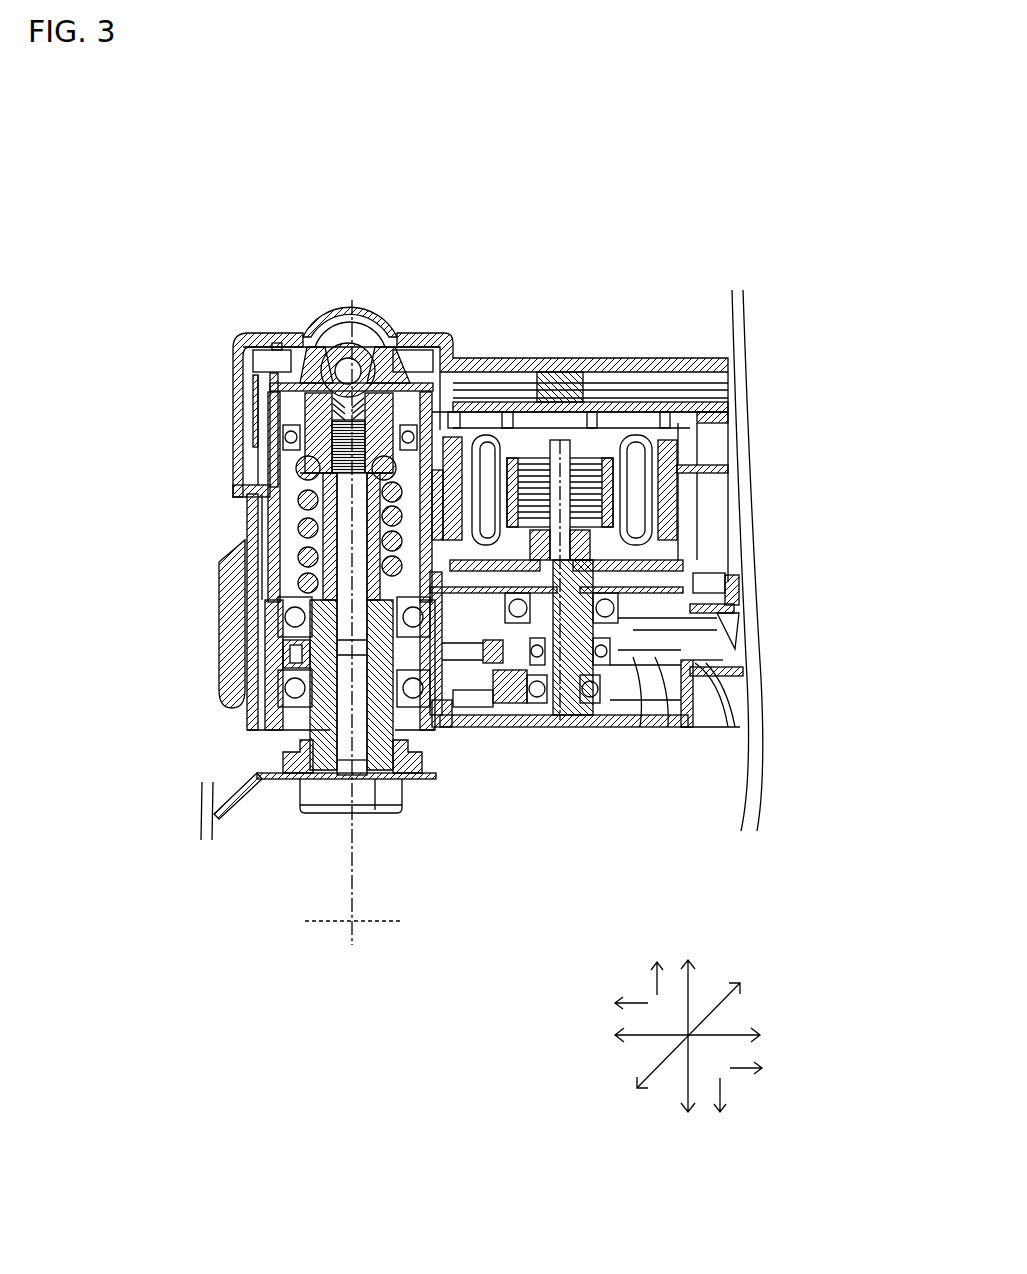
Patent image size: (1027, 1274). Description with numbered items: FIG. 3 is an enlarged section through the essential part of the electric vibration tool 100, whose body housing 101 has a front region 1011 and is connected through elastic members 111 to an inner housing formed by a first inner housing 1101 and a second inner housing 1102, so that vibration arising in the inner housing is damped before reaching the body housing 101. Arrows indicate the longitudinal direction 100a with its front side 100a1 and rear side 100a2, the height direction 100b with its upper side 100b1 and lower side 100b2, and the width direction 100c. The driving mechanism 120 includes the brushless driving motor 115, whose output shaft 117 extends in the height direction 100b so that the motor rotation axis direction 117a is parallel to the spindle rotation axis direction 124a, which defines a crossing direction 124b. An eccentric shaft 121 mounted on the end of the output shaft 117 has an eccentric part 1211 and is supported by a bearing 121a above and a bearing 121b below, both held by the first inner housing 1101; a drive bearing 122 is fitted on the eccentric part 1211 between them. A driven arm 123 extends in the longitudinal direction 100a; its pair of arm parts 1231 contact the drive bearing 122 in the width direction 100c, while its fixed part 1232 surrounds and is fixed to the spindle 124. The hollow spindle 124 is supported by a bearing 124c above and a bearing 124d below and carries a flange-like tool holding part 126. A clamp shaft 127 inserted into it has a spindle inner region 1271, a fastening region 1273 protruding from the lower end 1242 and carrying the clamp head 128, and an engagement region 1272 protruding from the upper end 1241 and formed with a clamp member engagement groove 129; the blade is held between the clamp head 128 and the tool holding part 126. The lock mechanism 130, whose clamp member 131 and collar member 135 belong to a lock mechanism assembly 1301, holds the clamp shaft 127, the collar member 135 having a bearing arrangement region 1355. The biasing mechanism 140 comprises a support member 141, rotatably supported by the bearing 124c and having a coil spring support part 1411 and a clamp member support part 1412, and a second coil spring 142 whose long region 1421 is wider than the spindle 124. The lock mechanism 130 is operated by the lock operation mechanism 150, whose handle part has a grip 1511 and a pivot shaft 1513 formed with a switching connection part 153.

The electric vibration tool 100 is at (188, 228).
The front region 1011 is at (568, 226).
The driving motor 115 is at (598, 372).
The elastic members 111 is at (553, 383).
The first inner housing 1101 is at (528, 412).
The second inner housing 1102 is at (437, 372).
The lock operation mechanism 150 is at (343, 305).
The clamp member 131 is at (300, 340).
The switching connection part 153 is at (320, 383).
The pivot shaft 1513 is at (372, 350).
The body housing 101 is at (250, 335).
The collar member 135 is at (262, 352).
The clamp member engagement groove 129 is at (268, 430).
The lock mechanism 130 is at (237, 466).
The lock mechanism assembly 1301 is at (237, 473).
The bearing arrangement region 1355 is at (240, 465).
The biasing mechanism 140 is at (262, 512).
The coil spring support part 1411 is at (227, 557).
The long region 1421 is at (476, 415).
The clamp member support part 1412 is at (405, 350).
The support member 141 is at (260, 533).
The second coil spring 142 is at (292, 530).
The engagement region 1272 is at (352, 420).
The clamp shaft 127 is at (343, 520).
The spindle inner region 1271 is at (420, 775).
The fastening region 1273 is at (300, 790).
The upper end 1241 is at (222, 583).
The fixed part 1232 is at (225, 658).
The bearing 124c is at (228, 603).
The grip 1511 is at (230, 638).
The bearing 124d is at (227, 710).
The spindle 124 is at (273, 737).
The clamp head 128 is at (305, 788).
The crossing direction 124b is at (380, 921).
The lower end 1242 is at (378, 820).
The spindle rotation axis direction 124a is at (352, 826).
The tool holding part 126 is at (365, 748).
The driven arm 123 is at (405, 737).
The output shaft 117 is at (627, 508).
The motor rotation axis direction 117a is at (563, 727).
The arm parts 1231 is at (512, 655).
The bearing 121b is at (597, 695).
The eccentric part 1211 is at (622, 682).
The driving mechanism 120 is at (660, 650).
The bearing 121a is at (653, 620).
The eccentric shaft 121 is at (617, 677).
The drive bearing 122 is at (598, 687).
The longitudinal direction 100a is at (645, 1040).
The height direction 100b is at (690, 992).
The width direction 100c is at (664, 1068).
The upper side 100b1 is at (650, 985).
The front side 100a1 is at (640, 1000).
The rear side 100a2 is at (745, 1078).
The lower side 100b2 is at (725, 1085).